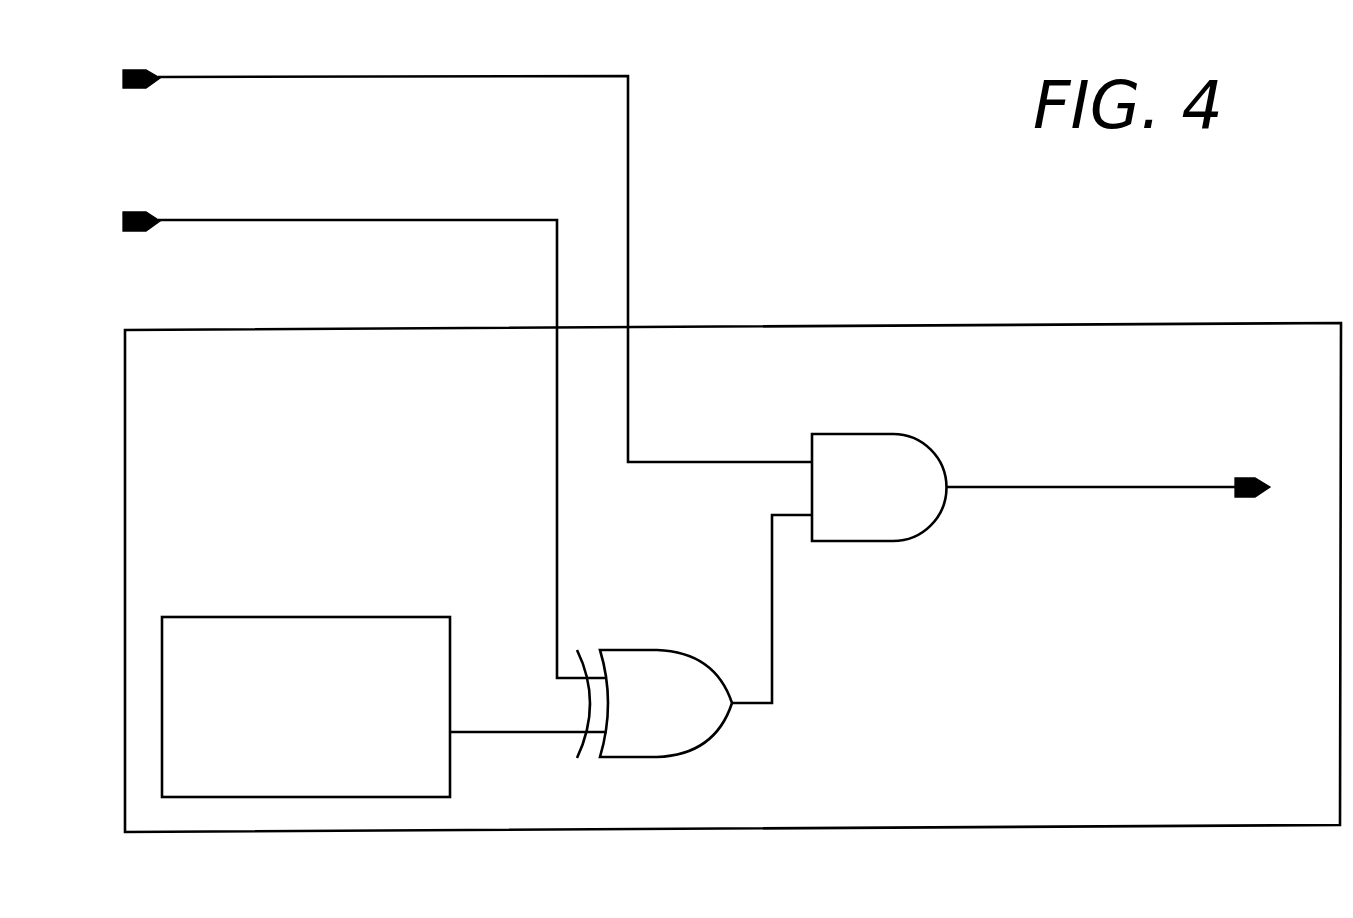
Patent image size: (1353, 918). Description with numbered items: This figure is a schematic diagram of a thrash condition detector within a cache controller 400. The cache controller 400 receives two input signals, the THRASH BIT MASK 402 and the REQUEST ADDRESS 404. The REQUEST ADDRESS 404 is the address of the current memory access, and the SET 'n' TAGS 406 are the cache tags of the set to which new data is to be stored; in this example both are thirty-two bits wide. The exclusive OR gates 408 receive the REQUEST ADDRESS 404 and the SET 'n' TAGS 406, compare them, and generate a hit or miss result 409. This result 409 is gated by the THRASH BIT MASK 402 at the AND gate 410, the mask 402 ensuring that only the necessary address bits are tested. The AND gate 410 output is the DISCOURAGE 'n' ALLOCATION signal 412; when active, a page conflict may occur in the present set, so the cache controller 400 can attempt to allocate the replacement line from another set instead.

The cache controller 400 is at (328, 468).
The THRASH BIT MASK 402 is at (303, 79).
The REQUEST ADDRESS 404 is at (303, 223).
The SET 'n' TAGS 406 is at (384, 707).
The exclusive OR gates 408 is at (682, 717).
The hit or miss result 409 is at (780, 613).
The AND gate 410 is at (897, 500).
The DISCOURAGE 'n' ALLOCATION signal 412 is at (1113, 488).